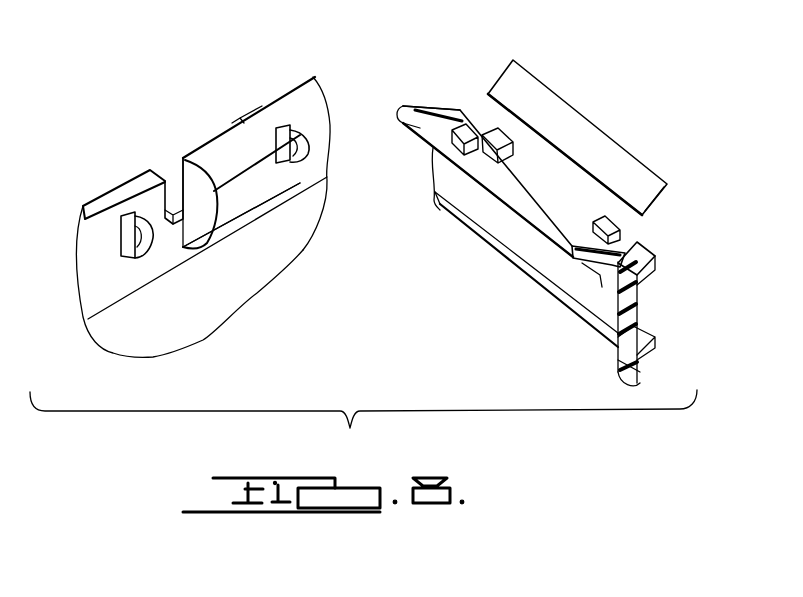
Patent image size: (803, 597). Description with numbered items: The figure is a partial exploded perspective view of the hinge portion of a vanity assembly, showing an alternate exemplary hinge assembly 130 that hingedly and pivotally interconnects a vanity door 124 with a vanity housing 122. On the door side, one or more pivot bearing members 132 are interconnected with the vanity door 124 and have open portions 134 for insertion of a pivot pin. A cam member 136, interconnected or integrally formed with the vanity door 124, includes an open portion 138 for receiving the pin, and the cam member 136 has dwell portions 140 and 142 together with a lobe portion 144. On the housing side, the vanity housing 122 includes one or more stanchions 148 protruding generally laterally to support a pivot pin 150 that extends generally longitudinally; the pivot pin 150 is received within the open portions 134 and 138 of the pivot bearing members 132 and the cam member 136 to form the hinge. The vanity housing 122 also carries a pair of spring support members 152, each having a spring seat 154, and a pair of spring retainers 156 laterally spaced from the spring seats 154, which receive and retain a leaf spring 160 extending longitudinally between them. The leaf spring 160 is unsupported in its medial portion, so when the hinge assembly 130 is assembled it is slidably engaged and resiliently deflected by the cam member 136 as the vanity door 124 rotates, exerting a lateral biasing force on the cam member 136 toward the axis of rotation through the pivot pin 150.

The vanity housing 122 is at (601, 313).
The vanity door 124 is at (86, 278).
The hinge assembly 130 is at (440, 50).
The pivot bearing member 132 is at (137, 248).
The open portion 134 is at (140, 221).
The cam member 136 is at (195, 216).
The open portion 138 is at (172, 177).
The dwell portion 140 is at (217, 160).
The dwell portion 142 is at (200, 247).
The lobe portion 144 is at (250, 199).
The stanchion 148 is at (430, 110).
The pivot pin 150 is at (423, 125).
The spring support member 152 is at (503, 153).
The spring seat 154 is at (487, 156).
The spring retainer 156 is at (443, 155).
The leaf spring 160 is at (570, 127).